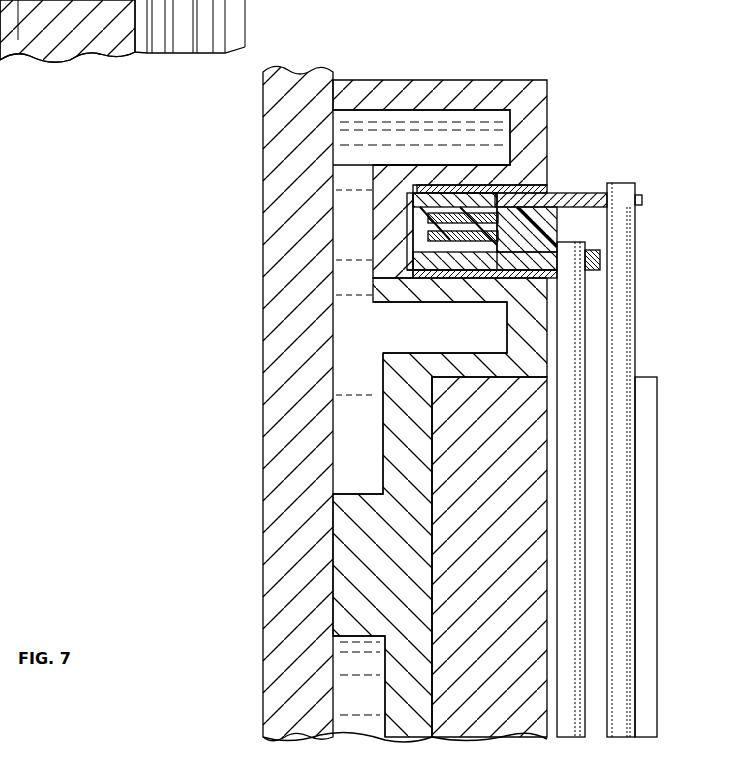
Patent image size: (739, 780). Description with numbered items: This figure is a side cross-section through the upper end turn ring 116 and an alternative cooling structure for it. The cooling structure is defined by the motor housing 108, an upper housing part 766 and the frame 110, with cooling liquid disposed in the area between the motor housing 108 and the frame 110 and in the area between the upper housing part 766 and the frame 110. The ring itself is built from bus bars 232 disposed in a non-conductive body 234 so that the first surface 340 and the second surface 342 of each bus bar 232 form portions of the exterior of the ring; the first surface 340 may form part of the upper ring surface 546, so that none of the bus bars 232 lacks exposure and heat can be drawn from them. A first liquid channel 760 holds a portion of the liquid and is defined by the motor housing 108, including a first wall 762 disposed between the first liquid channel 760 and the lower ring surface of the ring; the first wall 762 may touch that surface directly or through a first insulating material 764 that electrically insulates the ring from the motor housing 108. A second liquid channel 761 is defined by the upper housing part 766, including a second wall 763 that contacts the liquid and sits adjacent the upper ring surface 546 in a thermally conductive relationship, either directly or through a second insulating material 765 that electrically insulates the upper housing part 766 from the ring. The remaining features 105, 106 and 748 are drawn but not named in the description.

The inner bar 105 is at (572, 525).
The outer block 106 is at (657, 442).
The motor housing 108 is at (350, 598).
The frame 110 is at (280, 565).
The upper end turn ring 116 is at (400, 232).
The bus bar 232 is at (600, 262).
The non-conductive body 234 is at (408, 249).
The first surface 340 is at (590, 192).
The second surface 342 is at (425, 268).
The upper ring surface 546 is at (440, 184).
The channel 748 is at (358, 467).
The first liquid channel 760 is at (380, 346).
The second liquid channel 761 is at (390, 128).
The first wall 762 is at (478, 300).
The second wall 763 is at (472, 163).
The first insulating material 764 is at (437, 282).
The second insulating material 765 is at (548, 190).
The upper housing part 766 is at (417, 80).